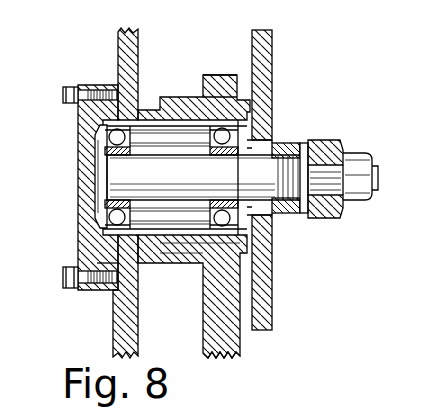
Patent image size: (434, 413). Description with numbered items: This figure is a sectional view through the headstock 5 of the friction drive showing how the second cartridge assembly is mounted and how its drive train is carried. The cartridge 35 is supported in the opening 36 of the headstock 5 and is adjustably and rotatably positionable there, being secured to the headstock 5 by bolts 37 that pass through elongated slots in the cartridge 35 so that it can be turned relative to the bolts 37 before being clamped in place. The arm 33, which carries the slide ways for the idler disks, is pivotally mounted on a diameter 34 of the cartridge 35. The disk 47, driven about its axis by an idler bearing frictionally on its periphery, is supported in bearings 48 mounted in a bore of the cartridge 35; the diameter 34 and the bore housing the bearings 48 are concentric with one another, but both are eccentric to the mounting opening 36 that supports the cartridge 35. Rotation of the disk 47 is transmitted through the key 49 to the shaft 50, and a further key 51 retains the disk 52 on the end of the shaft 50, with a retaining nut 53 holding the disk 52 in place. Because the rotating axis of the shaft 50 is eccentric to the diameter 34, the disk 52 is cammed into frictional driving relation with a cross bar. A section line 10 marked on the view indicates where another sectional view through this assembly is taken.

The section line 10 is at (42, 125).
The headstock 5 is at (117, 309).
The arm 33 is at (236, 348).
The diameter 34 is at (203, 262).
The cartridge 35 is at (80, 238).
The opening 36 is at (137, 92).
The bolts 37 is at (66, 285).
The disk 47 is at (258, 30).
The bearings 48 is at (190, 101).
The key 49 is at (269, 140).
The shaft 50 is at (307, 146).
The key 51 is at (347, 157).
The disk 52 is at (328, 142).
The retaining nut 53 is at (372, 163).